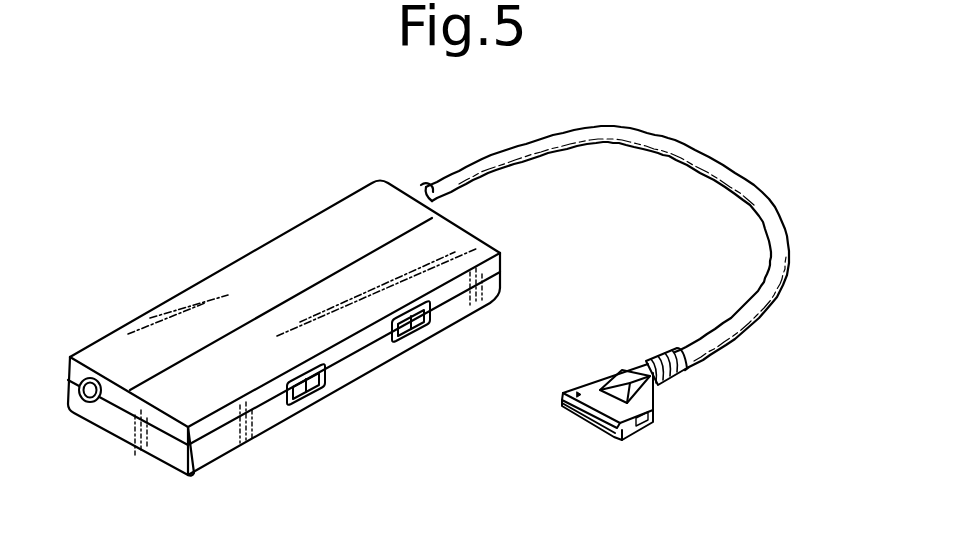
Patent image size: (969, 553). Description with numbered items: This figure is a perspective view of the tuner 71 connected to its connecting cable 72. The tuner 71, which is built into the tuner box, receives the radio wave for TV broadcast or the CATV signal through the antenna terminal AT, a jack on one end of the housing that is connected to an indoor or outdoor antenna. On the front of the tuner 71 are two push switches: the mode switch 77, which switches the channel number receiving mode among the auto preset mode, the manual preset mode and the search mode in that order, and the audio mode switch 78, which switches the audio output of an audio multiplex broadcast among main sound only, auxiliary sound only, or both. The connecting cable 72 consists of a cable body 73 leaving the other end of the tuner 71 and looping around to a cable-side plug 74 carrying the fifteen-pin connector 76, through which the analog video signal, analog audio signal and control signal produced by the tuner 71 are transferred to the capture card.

The tuner 71 is at (290, 222).
The connecting cable 72 is at (778, 194).
The cable body 73 is at (707, 161).
The cable-side plug 74 is at (600, 378).
The 15-pin connector 76 is at (574, 422).
The mode switch 77 is at (305, 398).
The audio mode switch 78 is at (410, 338).
The antenna terminal AT is at (88, 402).